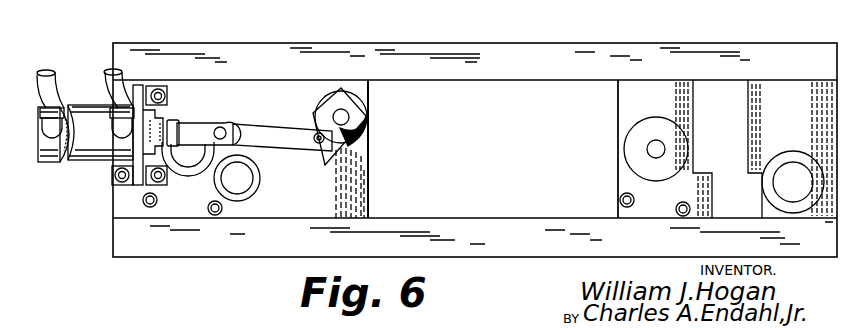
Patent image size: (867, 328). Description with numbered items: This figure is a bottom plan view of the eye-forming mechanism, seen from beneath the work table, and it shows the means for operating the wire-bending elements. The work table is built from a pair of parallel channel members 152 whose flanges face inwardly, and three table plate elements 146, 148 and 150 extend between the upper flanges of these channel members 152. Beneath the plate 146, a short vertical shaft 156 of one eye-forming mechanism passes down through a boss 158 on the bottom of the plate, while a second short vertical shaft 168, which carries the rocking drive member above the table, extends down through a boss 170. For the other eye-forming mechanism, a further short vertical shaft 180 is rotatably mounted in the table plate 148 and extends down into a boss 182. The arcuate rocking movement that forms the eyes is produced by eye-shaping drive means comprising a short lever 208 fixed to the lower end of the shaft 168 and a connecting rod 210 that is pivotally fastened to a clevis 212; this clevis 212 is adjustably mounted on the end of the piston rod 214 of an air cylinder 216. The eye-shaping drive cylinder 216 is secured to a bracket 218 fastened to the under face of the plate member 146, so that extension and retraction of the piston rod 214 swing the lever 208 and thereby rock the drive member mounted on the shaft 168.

The table plate element 146 is at (364, 186).
The table plate element 148 is at (625, 97).
The table plate element 150 is at (775, 88).
The channel member 152 is at (456, 45).
The short vertical shaft 156 is at (192, 151).
The boss 158 is at (188, 173).
The short vertical shaft 168 is at (349, 117).
The boss 170 is at (352, 92).
The short vertical shaft 180 is at (648, 148).
The boss 182 is at (640, 128).
The short lever 208 is at (316, 116).
The connecting rod 210 is at (302, 142).
The clevis 212 is at (210, 125).
The piston rod 214 is at (172, 120).
The air cylinder 216 is at (93, 157).
The bracket 218 is at (137, 177).